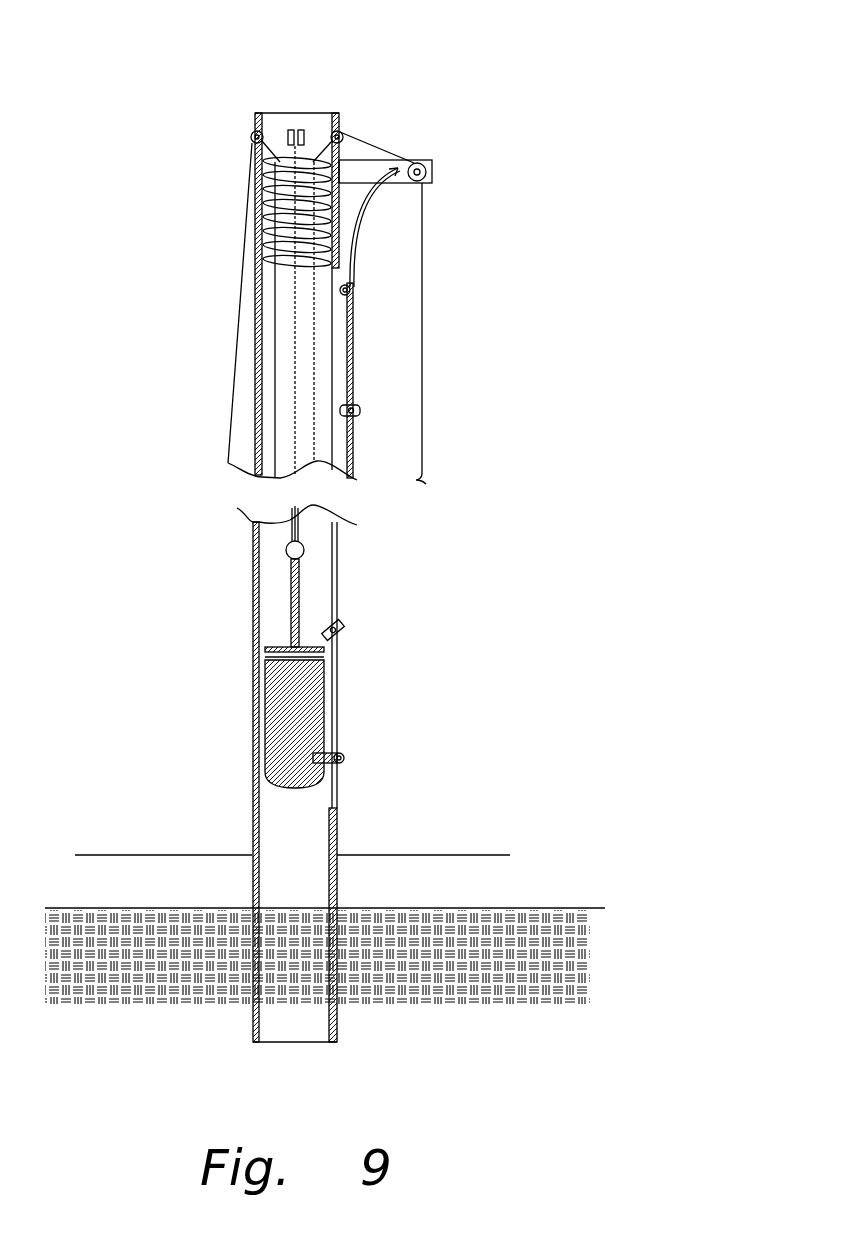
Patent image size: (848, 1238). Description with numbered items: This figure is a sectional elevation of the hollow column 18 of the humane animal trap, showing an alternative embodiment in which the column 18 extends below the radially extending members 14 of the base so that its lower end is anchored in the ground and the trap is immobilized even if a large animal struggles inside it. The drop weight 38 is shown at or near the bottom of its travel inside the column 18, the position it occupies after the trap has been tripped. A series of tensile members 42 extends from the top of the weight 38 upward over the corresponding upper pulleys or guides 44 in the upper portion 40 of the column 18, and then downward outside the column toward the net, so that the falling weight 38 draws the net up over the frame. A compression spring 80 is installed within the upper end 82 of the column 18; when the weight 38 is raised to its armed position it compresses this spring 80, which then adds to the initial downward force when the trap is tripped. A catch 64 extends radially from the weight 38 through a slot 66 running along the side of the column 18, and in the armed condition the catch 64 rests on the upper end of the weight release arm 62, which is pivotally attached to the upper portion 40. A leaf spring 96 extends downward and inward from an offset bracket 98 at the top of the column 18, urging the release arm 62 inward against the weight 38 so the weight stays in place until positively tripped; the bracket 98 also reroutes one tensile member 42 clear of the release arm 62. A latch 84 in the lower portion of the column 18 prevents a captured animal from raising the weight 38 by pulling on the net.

The radially extending members 14 is at (150, 855).
The hollow column 18 is at (253, 590).
The drop weight 38 is at (260, 740).
The upper portion of the column 40 is at (247, 327).
The tensile members 42 is at (314, 383).
The upper pulleys or guides 44 is at (268, 132).
The weight release arm 62 is at (353, 437).
The catch 64 is at (340, 750).
The slot 66 is at (338, 592).
The compression spring 80 is at (268, 225).
The upper end of the column 82 is at (255, 113).
The latch 84 is at (343, 634).
The leaf spring 96 is at (357, 222).
The offset bracket 98 is at (430, 160).